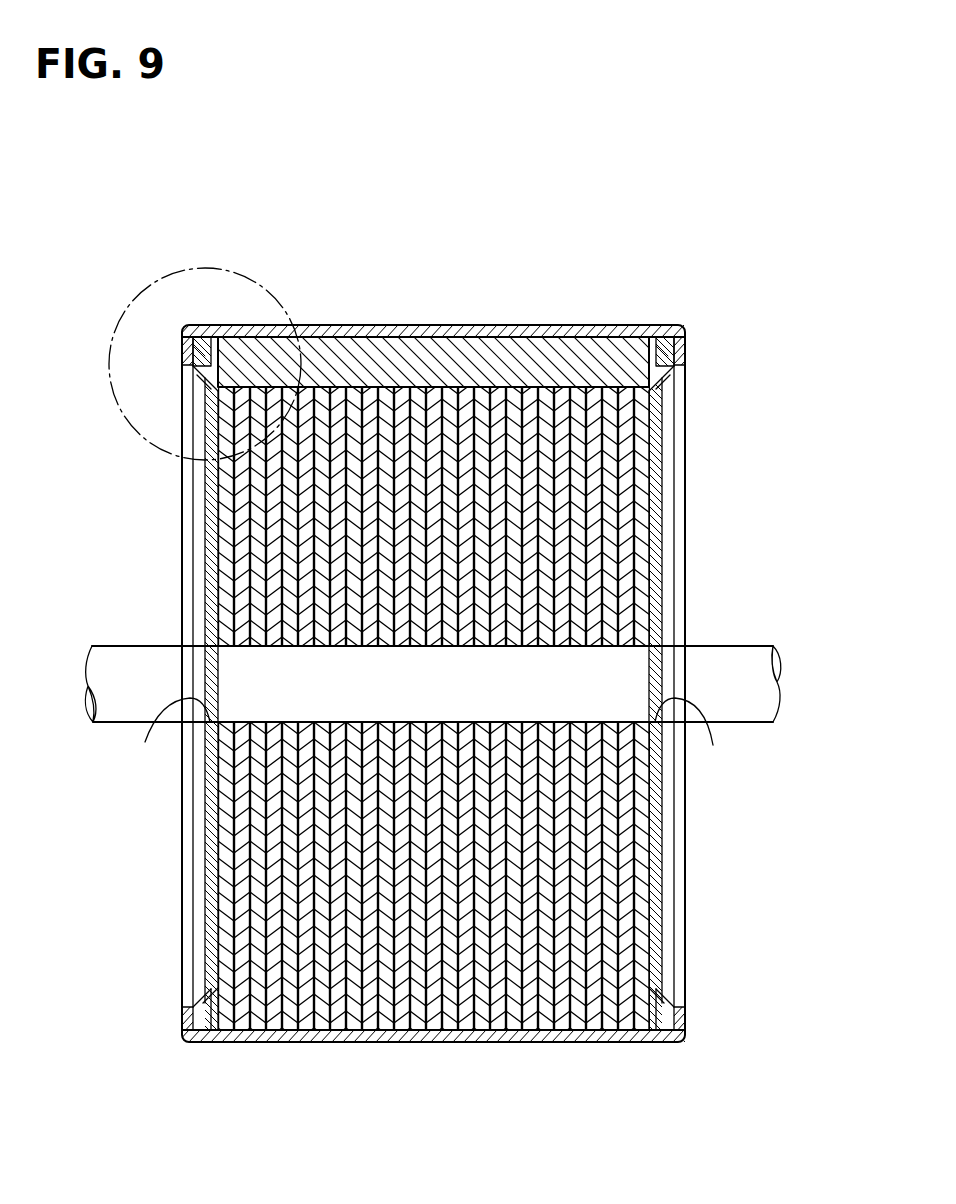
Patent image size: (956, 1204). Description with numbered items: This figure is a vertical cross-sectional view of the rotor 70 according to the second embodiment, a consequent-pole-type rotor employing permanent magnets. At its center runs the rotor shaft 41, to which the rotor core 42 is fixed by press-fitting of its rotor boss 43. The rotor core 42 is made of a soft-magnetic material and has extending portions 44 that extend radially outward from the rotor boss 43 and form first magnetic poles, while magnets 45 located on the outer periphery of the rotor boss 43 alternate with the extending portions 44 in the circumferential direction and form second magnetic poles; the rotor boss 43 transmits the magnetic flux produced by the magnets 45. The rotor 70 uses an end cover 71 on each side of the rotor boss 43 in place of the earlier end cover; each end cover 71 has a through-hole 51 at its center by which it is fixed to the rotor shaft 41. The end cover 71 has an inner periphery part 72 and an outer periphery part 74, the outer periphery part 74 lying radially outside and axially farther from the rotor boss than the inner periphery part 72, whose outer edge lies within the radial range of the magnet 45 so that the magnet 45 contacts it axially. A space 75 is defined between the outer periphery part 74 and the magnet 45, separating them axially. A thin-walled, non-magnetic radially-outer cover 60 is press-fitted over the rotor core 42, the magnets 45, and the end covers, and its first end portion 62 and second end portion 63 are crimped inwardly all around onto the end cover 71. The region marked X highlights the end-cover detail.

The rotor shaft 41 is at (762, 697).
The rotor core 42 is at (442, 770).
The rotor boss 43 is at (400, 855).
The extending portion 44 is at (290, 1113).
The magnet 45 is at (372, 362).
The through-hole 51 is at (429, 739).
The radially-outer cover 60 is at (433, 330).
The first end portion 62 is at (188, 345).
The second end portion 63 is at (676, 351).
The rotor 70 is at (515, 324).
The end cover 71 is at (206, 510).
The inner periphery part 72 is at (212, 570).
The outer periphery part 74 is at (188, 363).
The space 75 is at (212, 350).
The detail region X is at (138, 292).